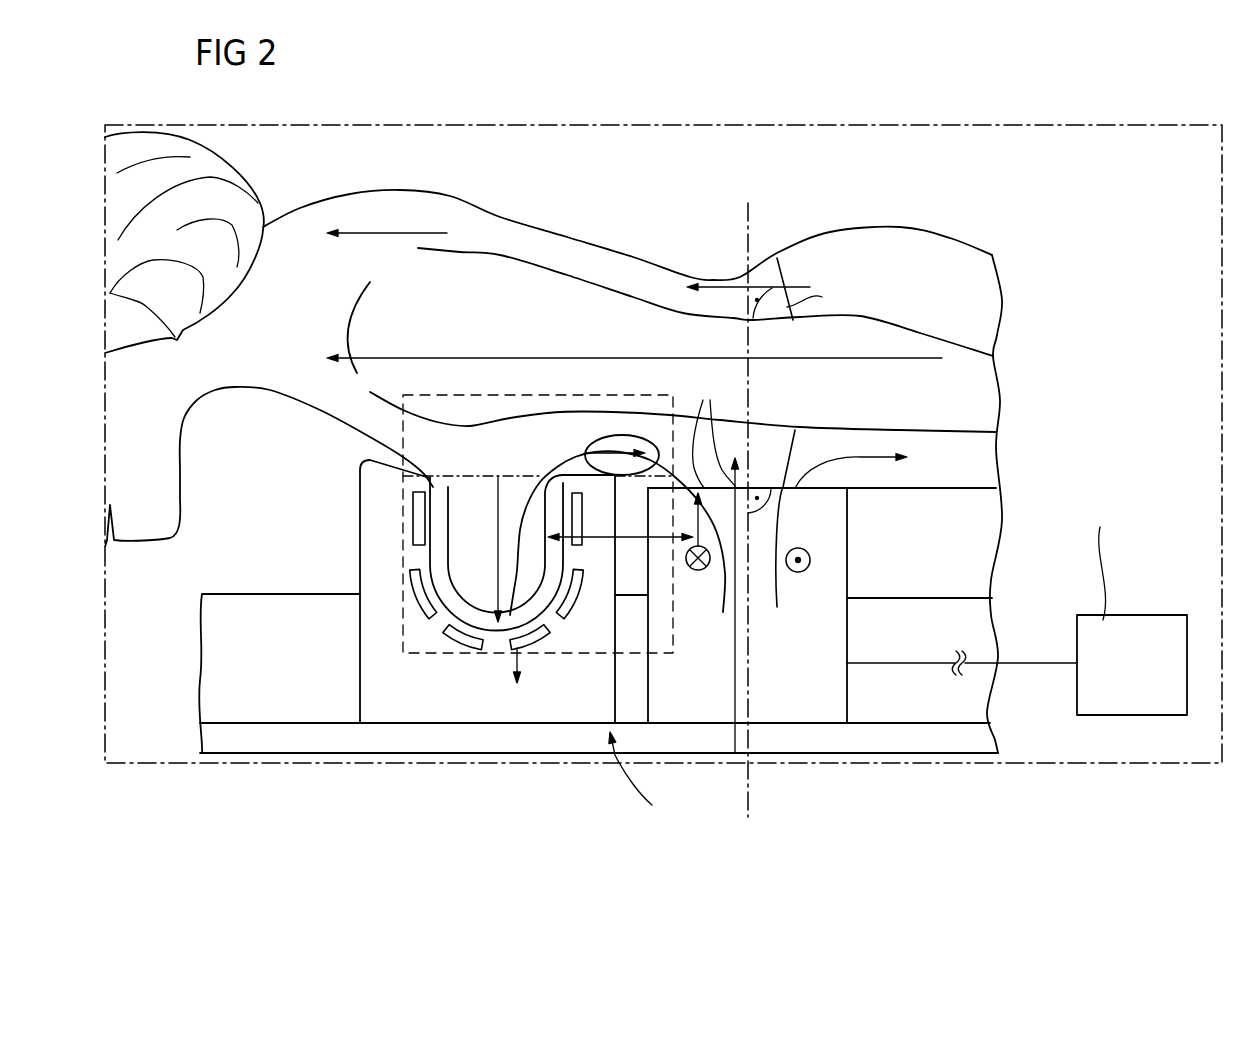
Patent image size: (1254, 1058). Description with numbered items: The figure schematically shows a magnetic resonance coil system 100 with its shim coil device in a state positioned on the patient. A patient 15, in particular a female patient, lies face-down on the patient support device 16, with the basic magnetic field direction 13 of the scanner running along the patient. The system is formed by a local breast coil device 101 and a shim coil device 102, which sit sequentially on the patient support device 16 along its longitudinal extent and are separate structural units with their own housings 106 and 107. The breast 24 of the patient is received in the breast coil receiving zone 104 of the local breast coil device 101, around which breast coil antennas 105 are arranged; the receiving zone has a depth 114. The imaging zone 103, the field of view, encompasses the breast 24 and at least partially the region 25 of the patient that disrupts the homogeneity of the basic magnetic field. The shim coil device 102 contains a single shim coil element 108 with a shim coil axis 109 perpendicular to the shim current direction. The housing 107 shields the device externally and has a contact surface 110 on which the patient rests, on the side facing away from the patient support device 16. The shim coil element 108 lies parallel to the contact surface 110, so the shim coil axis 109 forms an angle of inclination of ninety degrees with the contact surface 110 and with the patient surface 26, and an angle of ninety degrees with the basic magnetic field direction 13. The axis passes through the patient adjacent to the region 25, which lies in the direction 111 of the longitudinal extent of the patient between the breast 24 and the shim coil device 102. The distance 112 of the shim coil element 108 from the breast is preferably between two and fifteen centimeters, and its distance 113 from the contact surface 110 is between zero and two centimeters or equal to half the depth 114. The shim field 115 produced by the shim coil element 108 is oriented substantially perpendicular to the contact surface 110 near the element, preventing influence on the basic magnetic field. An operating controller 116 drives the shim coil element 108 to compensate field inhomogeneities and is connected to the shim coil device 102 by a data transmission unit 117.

The basic magnetic field direction 13 is at (394, 232).
The patient 15 is at (330, 210).
The patient support device 16 is at (273, 740).
The breast 24 is at (465, 597).
The region causing the disruption to the homogeneity of the basic magnetic field 25 is at (587, 445).
The patient surface 26 is at (932, 497).
The magnetic resonance coil system 100 is at (647, 775).
The local breast coil device 101 is at (522, 707).
The shim coil device 102 is at (800, 708).
The imaging zone 103 is at (550, 396).
The breast coil receiving zone 104 is at (437, 555).
The breast coil antennas 105 is at (463, 640).
The housing 106 is at (360, 667).
The housing 107 is at (848, 698).
The shim coil element 108 is at (698, 571).
The shim coil axis 109 is at (752, 215).
The contact surface 110 is at (829, 481).
The direction of the longitudinal extent of the patient 111 is at (468, 357).
The distance 112 is at (597, 542).
The distance 113 is at (723, 612).
The depth 114 is at (497, 572).
The shim field 115 is at (878, 453).
The operating controller 116 is at (1130, 613).
The data transmission unit 117 is at (1042, 663).